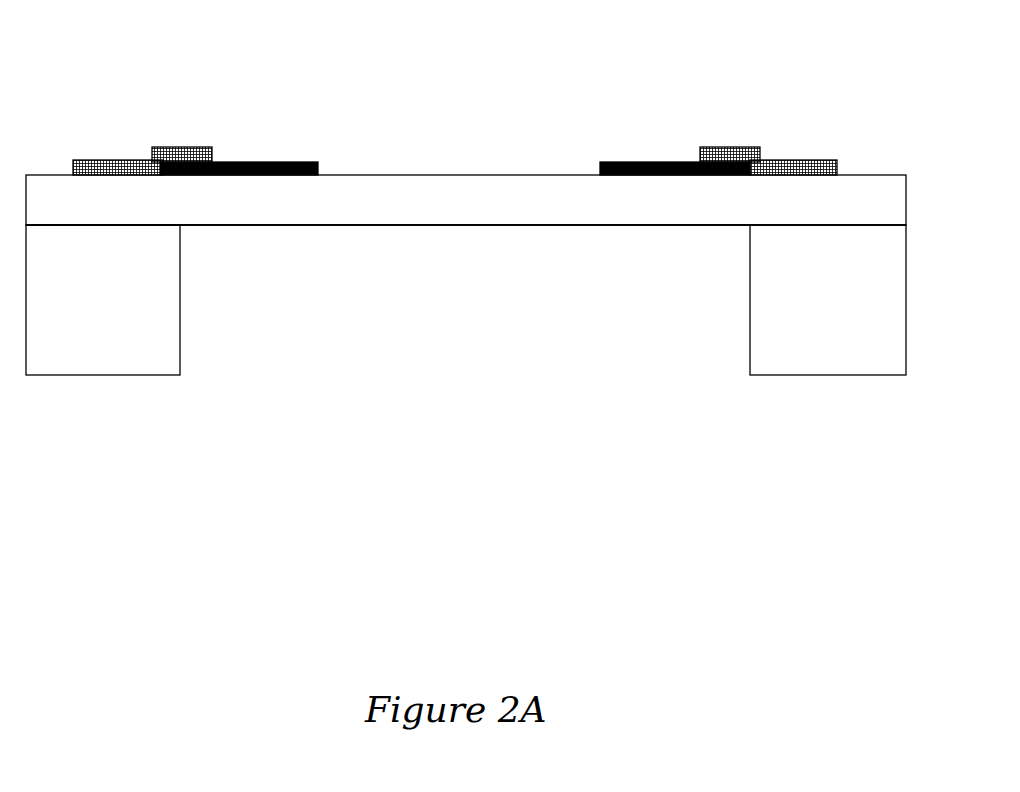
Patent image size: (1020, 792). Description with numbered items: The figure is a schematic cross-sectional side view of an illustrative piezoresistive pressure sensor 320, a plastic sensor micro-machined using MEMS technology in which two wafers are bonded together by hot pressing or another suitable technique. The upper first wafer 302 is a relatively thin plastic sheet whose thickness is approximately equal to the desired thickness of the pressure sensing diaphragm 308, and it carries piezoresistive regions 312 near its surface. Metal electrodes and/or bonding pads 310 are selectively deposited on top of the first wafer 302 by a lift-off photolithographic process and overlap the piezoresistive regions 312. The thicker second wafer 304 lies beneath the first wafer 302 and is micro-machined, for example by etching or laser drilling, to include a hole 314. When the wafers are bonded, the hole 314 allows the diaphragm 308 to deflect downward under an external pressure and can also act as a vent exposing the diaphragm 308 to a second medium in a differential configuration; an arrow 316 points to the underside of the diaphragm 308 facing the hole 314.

The first wafer 302 is at (866, 185).
The second wafer 304 is at (165, 352).
The pressure sensing diaphragm 308 is at (437, 220).
The metal electrodes and/or bonding pads 310 is at (108, 160).
The piezoresistive regions 312 is at (242, 162).
The hole 314 is at (470, 315).
The bottom surface of beam 316 is at (138, 231).
The piezoresistive pressure sensor 320 is at (511, 76).